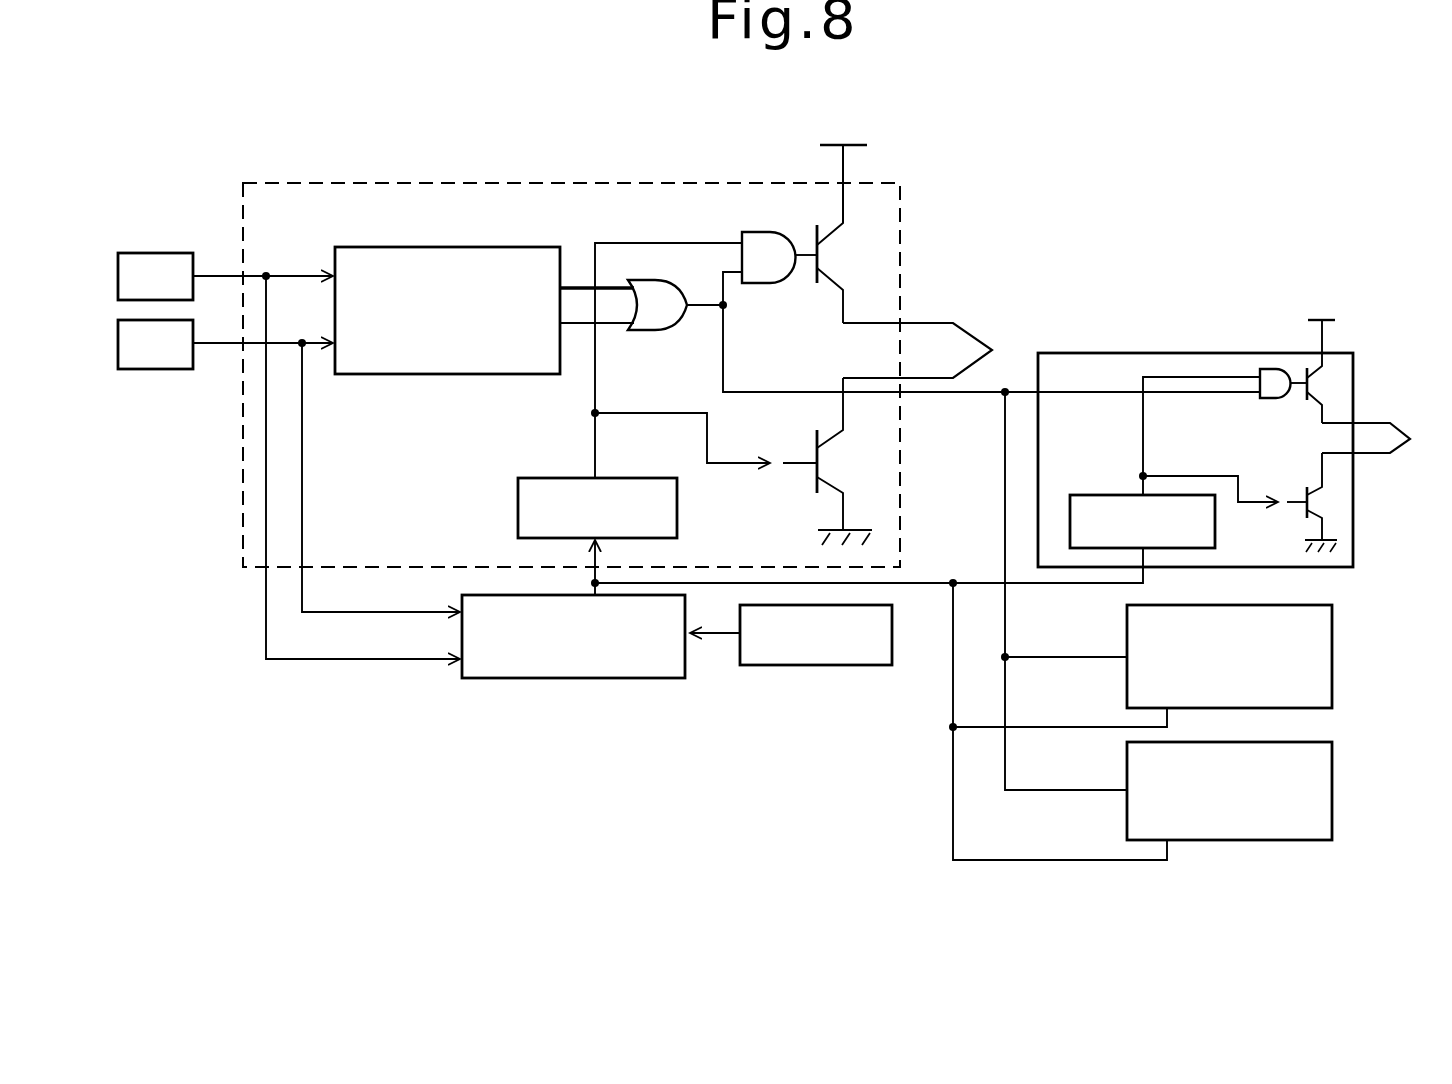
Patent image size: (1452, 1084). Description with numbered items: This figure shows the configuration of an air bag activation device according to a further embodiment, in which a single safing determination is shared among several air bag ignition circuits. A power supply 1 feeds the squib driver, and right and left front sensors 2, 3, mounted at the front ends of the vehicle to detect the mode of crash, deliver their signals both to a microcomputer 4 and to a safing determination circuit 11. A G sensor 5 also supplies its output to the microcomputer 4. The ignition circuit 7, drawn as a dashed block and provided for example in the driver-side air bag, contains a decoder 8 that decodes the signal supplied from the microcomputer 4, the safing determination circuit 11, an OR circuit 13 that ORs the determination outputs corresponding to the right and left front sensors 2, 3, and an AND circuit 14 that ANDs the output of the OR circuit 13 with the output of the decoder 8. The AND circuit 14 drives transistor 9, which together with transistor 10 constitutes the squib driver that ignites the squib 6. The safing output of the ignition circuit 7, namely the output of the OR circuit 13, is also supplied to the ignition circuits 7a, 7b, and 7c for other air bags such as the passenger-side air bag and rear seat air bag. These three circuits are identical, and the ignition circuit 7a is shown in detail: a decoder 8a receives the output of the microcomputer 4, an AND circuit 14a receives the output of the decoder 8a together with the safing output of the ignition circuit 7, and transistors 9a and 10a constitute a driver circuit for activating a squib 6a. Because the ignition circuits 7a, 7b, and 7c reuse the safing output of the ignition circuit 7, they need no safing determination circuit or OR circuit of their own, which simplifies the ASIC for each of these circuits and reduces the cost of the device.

The power supply 1 is at (853, 145).
The right front sensor 2 is at (168, 253).
The left front sensor 3 is at (160, 369).
The microcomputer 4 is at (618, 678).
The G sensor 5 is at (808, 665).
The squib 6 is at (977, 338).
The squib 6a is at (1388, 440).
The ignition circuit 7 is at (603, 182).
The ignition circuit 7a is at (1355, 402).
The ignition circuit 7b is at (1333, 660).
The ignition circuit 7c is at (1333, 793).
The decoder 8 is at (518, 495).
The decoder 8a is at (1098, 495).
The transistor 9 is at (837, 258).
The transistor 9a is at (1317, 380).
The transistor 10 is at (838, 472).
The transistor 10a is at (1327, 500).
The safing determination circuit 11 is at (497, 247).
The OR circuit 13 is at (647, 330).
The AND circuit 14 is at (767, 283).
The AND circuit 14a is at (1278, 380).